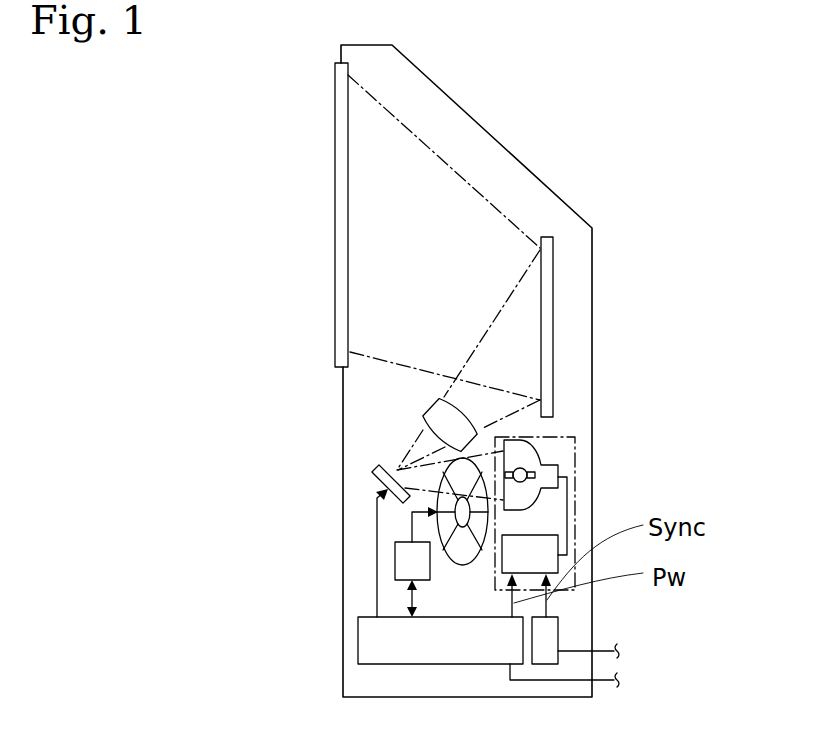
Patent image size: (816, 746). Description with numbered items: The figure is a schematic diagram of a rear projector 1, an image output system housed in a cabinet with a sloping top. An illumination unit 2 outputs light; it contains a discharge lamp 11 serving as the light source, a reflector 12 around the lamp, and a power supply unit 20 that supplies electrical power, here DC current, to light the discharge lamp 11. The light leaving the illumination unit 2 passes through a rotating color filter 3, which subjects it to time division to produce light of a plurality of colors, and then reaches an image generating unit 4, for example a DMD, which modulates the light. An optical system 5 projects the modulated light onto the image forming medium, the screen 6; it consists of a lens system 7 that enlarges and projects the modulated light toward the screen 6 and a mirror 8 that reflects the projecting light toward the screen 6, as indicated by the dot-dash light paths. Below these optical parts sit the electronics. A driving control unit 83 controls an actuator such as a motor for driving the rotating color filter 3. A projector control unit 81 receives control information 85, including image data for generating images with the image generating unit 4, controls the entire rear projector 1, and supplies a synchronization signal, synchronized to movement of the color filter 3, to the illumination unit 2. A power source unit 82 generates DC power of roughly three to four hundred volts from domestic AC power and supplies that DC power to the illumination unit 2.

The rear projector 1 is at (552, 124).
The illumination unit 2 is at (568, 468).
The color filter 3 is at (468, 542).
The image generating unit 4 is at (370, 477).
The optical system 5 is at (404, 407).
The screen 6 is at (342, 217).
The lens system 7 is at (438, 412).
The mirror 8 is at (548, 308).
The discharge lamp 11 is at (533, 441).
The reflector 12 is at (522, 473).
The power supply unit 20 is at (543, 553).
The projector control unit 81 is at (370, 632).
The power source unit 82 is at (555, 637).
The driving control unit 83 is at (395, 555).
The control information 85 is at (563, 682).